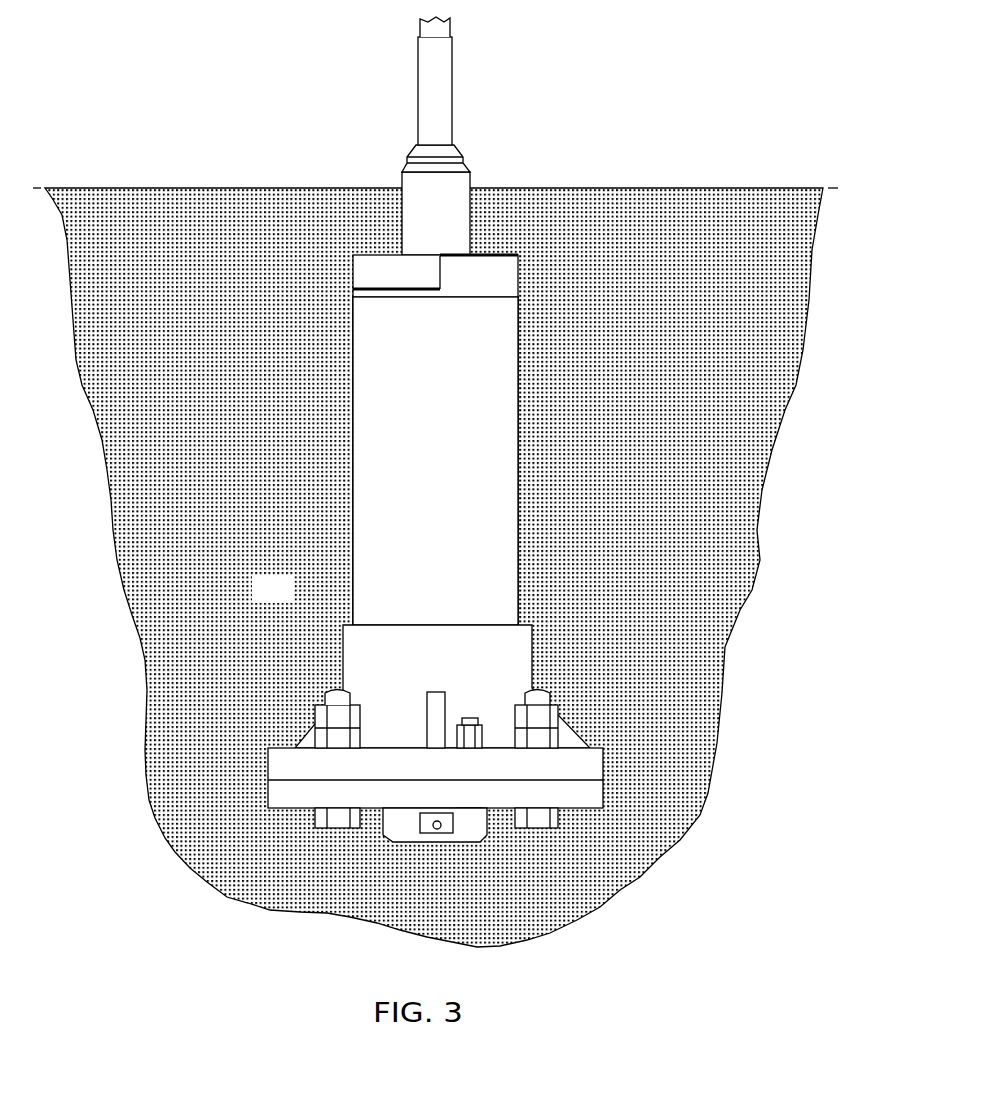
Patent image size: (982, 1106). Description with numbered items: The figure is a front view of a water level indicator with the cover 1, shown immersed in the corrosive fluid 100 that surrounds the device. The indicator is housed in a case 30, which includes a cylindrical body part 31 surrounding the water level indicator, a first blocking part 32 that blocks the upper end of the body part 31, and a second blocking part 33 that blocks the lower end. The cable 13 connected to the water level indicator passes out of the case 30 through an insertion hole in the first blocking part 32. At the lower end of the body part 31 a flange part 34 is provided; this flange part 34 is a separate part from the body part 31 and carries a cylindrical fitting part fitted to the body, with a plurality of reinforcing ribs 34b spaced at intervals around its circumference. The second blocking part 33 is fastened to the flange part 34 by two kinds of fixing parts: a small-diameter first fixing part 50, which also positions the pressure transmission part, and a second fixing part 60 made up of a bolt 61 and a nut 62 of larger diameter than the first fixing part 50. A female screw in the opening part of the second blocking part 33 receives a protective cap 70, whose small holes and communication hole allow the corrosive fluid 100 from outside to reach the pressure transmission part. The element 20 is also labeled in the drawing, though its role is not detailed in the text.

The cover 1 is at (343, 327).
The cable 13 is at (420, 25).
The sensor unit 20 is at (343, 442).
The case 30 is at (528, 357).
The body part 31 is at (520, 442).
The first blocking part 32 is at (493, 253).
The second blocking part 33 is at (578, 810).
The flange part 34 is at (597, 738).
The reinforcing rib 34b is at (417, 710).
The first fixing part 50 is at (479, 712).
The second fixing part 60 is at (300, 705).
The bolt 61 is at (547, 690).
The nut 62 is at (557, 737).
The protective cap 70 is at (392, 843).
The corrosive fluid 100 is at (755, 188).